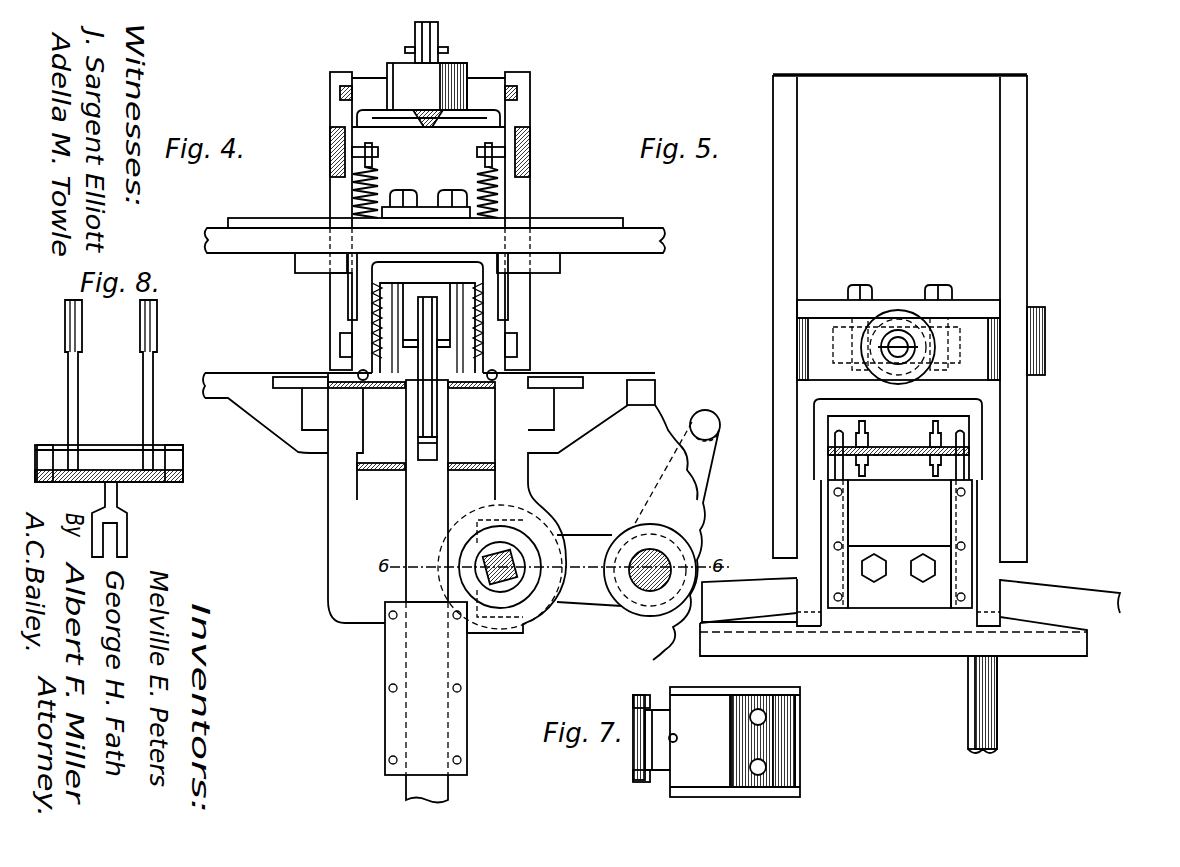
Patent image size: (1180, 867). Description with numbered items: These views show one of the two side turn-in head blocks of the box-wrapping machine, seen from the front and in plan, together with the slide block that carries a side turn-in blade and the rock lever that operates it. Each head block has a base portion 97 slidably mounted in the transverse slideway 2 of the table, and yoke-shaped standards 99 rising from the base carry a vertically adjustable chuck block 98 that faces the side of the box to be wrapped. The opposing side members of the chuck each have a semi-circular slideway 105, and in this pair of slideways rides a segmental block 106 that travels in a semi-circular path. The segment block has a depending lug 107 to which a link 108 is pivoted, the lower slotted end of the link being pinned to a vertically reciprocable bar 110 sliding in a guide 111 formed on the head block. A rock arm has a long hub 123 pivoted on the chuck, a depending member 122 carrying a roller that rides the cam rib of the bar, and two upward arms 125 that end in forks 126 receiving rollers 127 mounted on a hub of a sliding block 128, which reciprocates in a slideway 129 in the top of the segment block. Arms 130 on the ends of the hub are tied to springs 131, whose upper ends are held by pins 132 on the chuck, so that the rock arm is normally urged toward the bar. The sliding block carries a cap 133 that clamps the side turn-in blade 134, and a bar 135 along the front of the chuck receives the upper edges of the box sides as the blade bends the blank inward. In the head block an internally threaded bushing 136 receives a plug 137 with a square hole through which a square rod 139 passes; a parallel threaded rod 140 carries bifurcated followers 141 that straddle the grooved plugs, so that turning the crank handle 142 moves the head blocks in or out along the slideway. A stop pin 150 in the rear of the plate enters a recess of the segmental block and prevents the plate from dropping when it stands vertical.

In FIG. 4, the transverse slideway 2 is at (300, 415).
In FIG. 4, the head block base portion 97 is at (348, 433).
In FIG. 5, the head block base portion 97 is at (900, 318).
In FIG. 4, the chuck block 98 is at (430, 221).
In FIG. 5, the chuck block 98 is at (838, 387).
In FIG. 5, the standards 99 is at (797, 348).
In FIG. 4, the semi-circular slideway 105 is at (340, 93).
In FIG. 4, the segmental block 106 is at (490, 294).
In FIG. 4, the depending lug 107 is at (410, 320).
In FIG. 4, the link 108 is at (427, 387).
In FIG. 4, the vertically reciprocable bar 110 is at (417, 508).
In FIG. 4, the guide 111 is at (385, 668).
In FIG. 8, the depending member 122 is at (118, 502).
In FIG. 4, the long hub 123 is at (457, 375).
In FIG. 8, the long hub 123 is at (103, 455).
In FIG. 4, the arms 125 is at (387, 303).
In FIG. 8, the arms 125 is at (143, 378).
In FIG. 5, the fork 126 is at (930, 442).
In FIG. 5, the rollers 127 is at (928, 460).
In FIG. 7, the rollers 127 is at (636, 700).
In FIG. 5, the sliding block 128 is at (899, 544).
In FIG. 7, the sliding block 128 is at (722, 742).
In FIG. 5, the slideway 129 is at (828, 502).
In FIG. 4, the arms 130 is at (358, 372).
In FIG. 8, the arms 130 is at (55, 446).
In FIG. 4, the springs 131 is at (355, 182).
In FIG. 4, the pins 132 is at (352, 151).
In FIG. 4, the cap 133 is at (423, 208).
In FIG. 5, the cap 133 is at (898, 580).
In FIG. 4, the side turn-in blade 134 is at (600, 222).
In FIG. 5, the side turn-in blade 134 is at (905, 645).
In FIG. 4, the bar 135 is at (660, 237).
In FIG. 5, the bar 135 is at (1054, 588).
In FIG. 4, the internally threaded bushing 136 is at (518, 547).
In FIG. 4, the plug 137 is at (520, 557).
In FIG. 4, the square rod 139 is at (507, 583).
In FIG. 4, the threaded rod 140 is at (650, 552).
In FIG. 4, the follower 141 is at (588, 595).
In FIG. 4, the crank handle 142 is at (700, 412).
In FIG. 7, the stop pin 150 is at (677, 735).